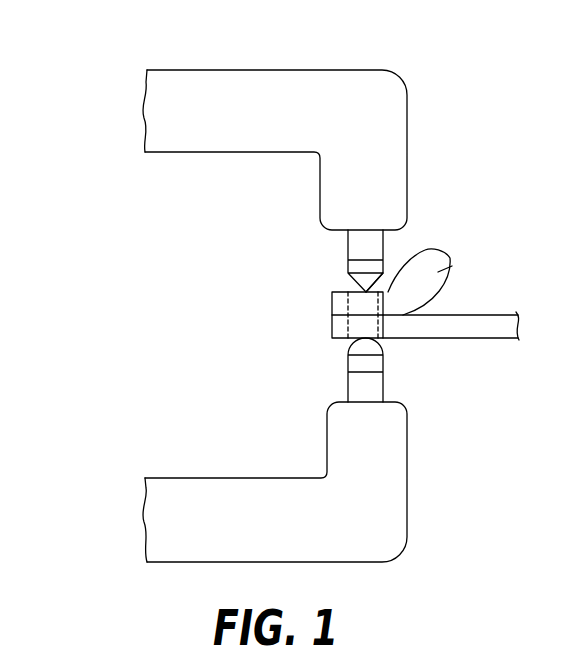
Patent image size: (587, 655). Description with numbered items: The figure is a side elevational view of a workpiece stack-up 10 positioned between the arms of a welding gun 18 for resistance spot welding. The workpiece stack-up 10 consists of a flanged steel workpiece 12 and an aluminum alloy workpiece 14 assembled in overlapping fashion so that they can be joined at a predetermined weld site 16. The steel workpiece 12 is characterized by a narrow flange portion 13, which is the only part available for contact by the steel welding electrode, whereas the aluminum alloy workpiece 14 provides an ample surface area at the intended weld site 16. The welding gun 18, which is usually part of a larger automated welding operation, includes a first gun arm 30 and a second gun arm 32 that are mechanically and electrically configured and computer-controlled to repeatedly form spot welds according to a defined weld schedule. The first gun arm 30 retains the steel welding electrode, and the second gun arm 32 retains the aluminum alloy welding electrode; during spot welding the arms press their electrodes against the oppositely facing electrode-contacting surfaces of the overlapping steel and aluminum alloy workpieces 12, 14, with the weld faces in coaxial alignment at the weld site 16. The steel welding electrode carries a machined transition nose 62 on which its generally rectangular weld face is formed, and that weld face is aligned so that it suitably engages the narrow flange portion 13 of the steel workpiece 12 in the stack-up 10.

The workpiece stack-up 10 is at (300, 318).
The steel workpiece 12 is at (438, 270).
The narrow flange portion 13 is at (338, 291).
The aluminum alloy workpiece 14 is at (485, 330).
The weld site 16 is at (345, 310).
The welding gun 18 is at (128, 99).
The first gun arm 30 is at (373, 110).
The second gun arm 32 is at (373, 522).
The transition nose 62 is at (385, 285).